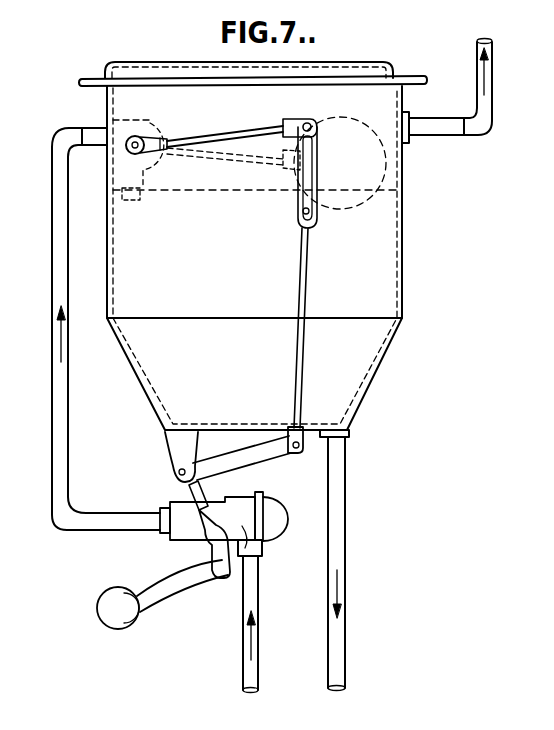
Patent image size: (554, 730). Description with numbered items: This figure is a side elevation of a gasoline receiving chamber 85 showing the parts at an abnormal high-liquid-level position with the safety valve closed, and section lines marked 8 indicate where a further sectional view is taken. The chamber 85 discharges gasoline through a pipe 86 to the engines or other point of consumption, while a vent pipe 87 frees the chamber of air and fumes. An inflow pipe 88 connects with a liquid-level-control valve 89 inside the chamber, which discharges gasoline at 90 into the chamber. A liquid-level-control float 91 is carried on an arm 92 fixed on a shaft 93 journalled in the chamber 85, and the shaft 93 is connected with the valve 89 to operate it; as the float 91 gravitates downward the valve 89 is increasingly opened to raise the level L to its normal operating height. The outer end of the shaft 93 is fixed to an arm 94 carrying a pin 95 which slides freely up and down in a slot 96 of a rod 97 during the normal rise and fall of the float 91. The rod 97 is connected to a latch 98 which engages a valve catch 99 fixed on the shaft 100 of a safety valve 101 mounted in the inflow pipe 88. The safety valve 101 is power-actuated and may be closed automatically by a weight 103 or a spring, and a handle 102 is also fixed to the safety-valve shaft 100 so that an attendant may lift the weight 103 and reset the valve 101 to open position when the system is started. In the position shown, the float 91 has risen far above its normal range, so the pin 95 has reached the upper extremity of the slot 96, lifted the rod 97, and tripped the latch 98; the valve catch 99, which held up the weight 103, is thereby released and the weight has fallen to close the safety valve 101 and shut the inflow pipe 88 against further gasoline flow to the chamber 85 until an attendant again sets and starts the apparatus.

The section line 8- 8 is at (60, 40).
The gasoline receiving chamber 85 is at (385, 260).
The pipe 86 is at (346, 540).
The vent pipe 87 is at (493, 101).
The inflow pipe 88 is at (58, 183).
The liquid-level-control valve 89 is at (158, 131).
The discharge point 90 is at (132, 200).
The liquid-level-control float 91 is at (366, 127).
The arm 92 is at (224, 152).
The shaft 93 is at (137, 128).
The arm 94 is at (232, 140).
The pin 95 is at (309, 122).
The slot 96 is at (303, 208).
The rod 97 is at (303, 358).
The latch 98 is at (270, 456).
The valve catch 99 is at (186, 492).
The shaft 100 is at (195, 540).
The safety valve 101 is at (265, 548).
The handle 102 is at (178, 592).
The weight 103 is at (115, 592).
The level L is at (194, 187).